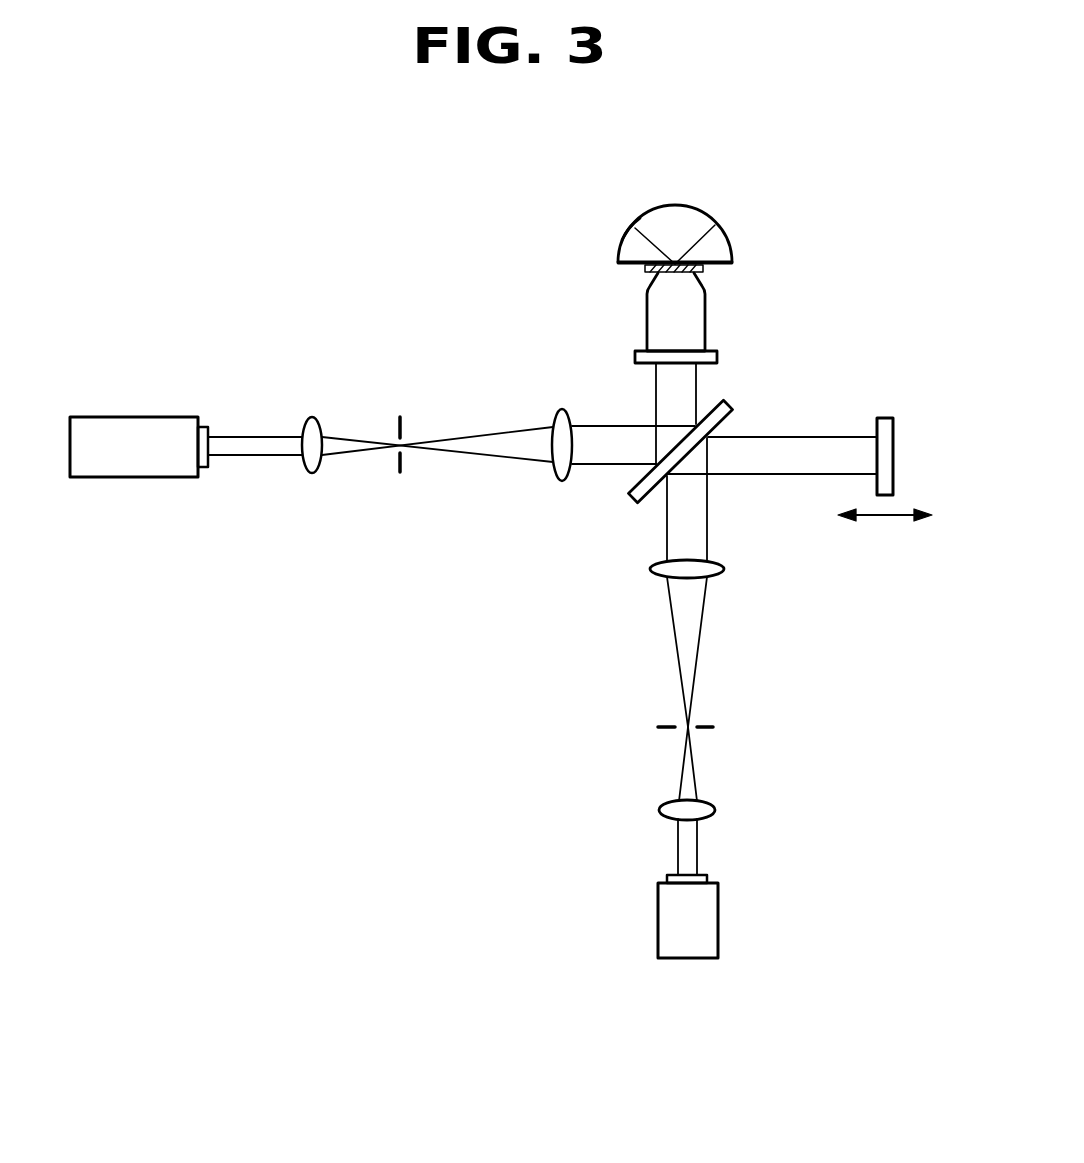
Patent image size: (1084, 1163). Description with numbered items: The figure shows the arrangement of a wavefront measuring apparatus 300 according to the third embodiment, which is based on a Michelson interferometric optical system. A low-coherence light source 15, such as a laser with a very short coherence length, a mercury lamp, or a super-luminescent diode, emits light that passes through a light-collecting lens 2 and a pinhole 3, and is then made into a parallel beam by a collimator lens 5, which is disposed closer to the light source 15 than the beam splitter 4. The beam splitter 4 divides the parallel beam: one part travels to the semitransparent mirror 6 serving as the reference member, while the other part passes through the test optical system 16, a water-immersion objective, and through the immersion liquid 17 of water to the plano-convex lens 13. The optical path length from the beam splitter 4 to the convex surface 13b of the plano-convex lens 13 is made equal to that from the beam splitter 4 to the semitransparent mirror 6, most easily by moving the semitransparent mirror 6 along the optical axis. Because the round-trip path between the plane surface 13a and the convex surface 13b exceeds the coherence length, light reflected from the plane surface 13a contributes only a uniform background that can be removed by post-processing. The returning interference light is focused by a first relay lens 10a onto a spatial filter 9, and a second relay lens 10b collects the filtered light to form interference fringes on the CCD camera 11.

The wavefront measuring apparatus 300 is at (468, 664).
The light source 15 is at (140, 425).
The light-collecting lens 2 is at (312, 417).
The pinhole 3 is at (400, 413).
The collimator lens 5 is at (562, 481).
The beam splitter 4 is at (735, 402).
The semitransparent mirror 6 is at (883, 418).
The plano-convex lens 13 is at (678, 218).
The plane surface 13a is at (720, 266).
The convex surface 13b is at (622, 237).
The immersion liquid 17 is at (643, 268).
The test optical system 16 is at (655, 327).
The first relay lens 10a is at (724, 568).
The spatial filter 9 is at (710, 728).
The second relay lens 10b is at (717, 809).
The CCD camera 11 is at (707, 925).